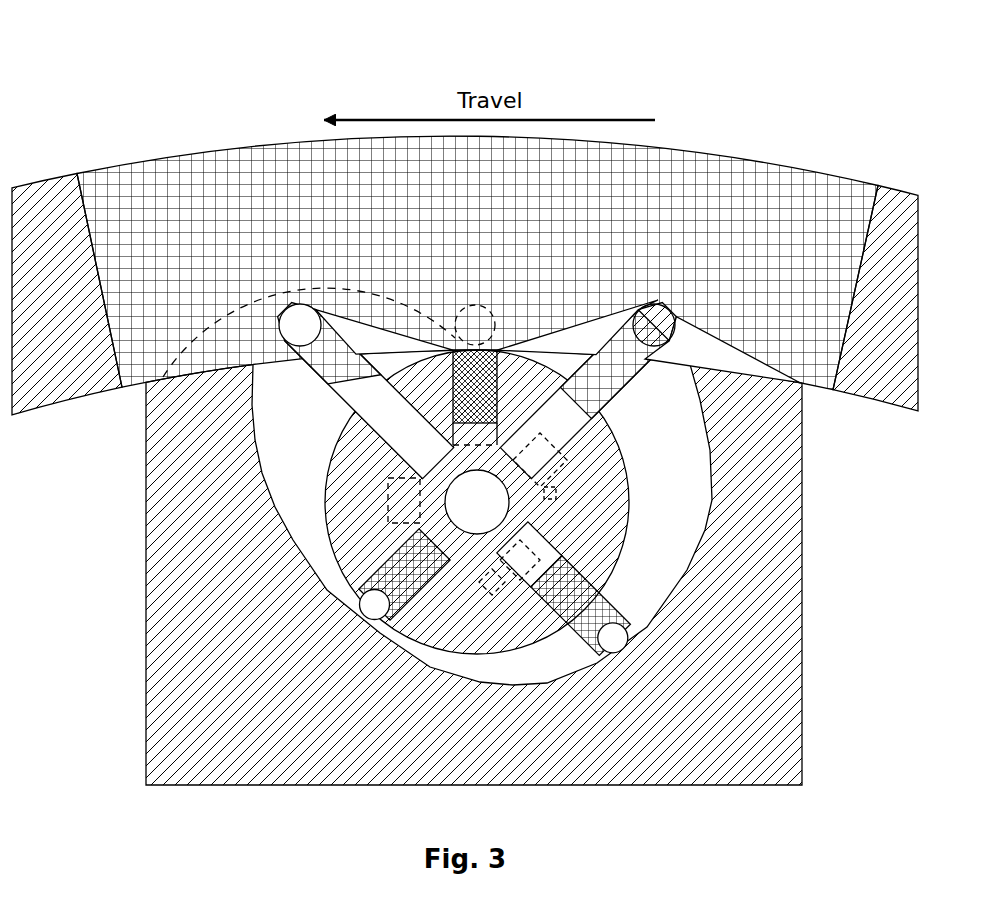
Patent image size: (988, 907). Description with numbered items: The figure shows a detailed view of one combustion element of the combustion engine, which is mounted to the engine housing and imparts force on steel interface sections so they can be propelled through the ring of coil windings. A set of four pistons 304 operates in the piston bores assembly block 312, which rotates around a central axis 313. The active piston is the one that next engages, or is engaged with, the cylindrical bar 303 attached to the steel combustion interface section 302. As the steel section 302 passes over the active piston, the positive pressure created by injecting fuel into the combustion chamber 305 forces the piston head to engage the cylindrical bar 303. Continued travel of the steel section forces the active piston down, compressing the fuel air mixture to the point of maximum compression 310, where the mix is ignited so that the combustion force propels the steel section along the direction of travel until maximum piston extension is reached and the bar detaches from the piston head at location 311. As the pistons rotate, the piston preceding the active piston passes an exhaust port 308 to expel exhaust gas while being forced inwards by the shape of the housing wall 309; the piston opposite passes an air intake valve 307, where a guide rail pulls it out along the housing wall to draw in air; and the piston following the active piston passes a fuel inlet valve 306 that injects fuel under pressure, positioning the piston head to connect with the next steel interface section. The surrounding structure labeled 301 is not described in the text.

The frame band 301 is at (42, 202).
The steel combustion interface section 302 is at (217, 175).
The cylindrical bar 303 is at (673, 323).
The pistons 304 is at (622, 378).
The combustion chamber 305 is at (567, 423).
The fuel inlet valve 306 is at (548, 490).
The air intake valve 307 is at (507, 573).
The exhaust port 308 is at (410, 506).
The housing wall 309 is at (257, 458).
The point of maximum compression 310 is at (460, 305).
The location of cylindrical bar detachment 311 is at (277, 325).
The piston bores assembly block 312 is at (330, 555).
The central axis 313 is at (460, 507).